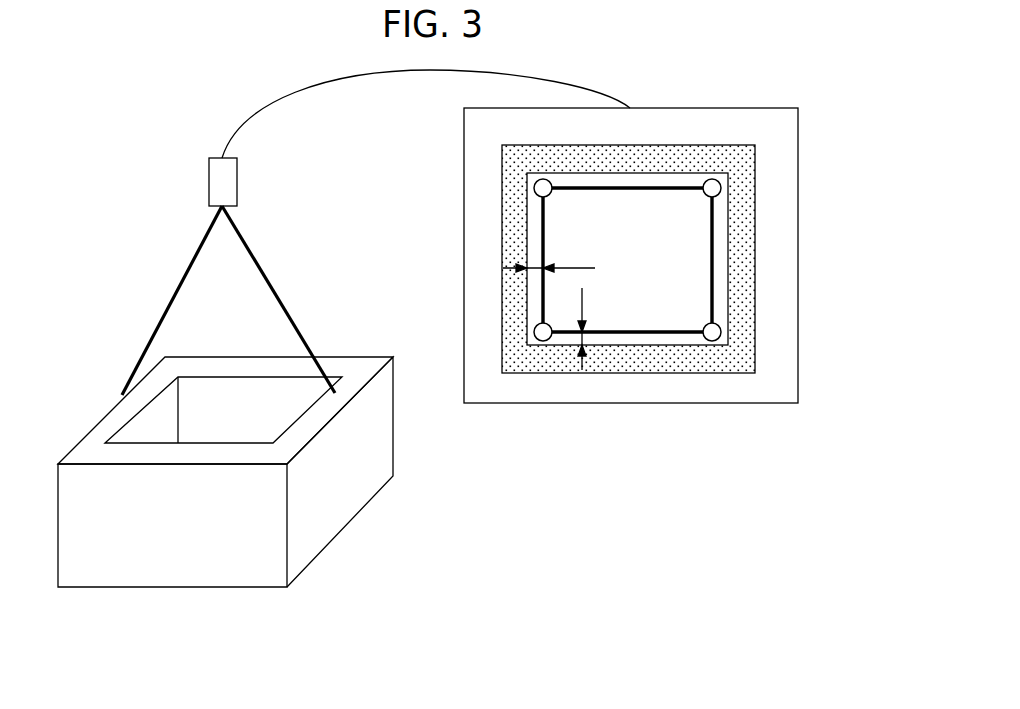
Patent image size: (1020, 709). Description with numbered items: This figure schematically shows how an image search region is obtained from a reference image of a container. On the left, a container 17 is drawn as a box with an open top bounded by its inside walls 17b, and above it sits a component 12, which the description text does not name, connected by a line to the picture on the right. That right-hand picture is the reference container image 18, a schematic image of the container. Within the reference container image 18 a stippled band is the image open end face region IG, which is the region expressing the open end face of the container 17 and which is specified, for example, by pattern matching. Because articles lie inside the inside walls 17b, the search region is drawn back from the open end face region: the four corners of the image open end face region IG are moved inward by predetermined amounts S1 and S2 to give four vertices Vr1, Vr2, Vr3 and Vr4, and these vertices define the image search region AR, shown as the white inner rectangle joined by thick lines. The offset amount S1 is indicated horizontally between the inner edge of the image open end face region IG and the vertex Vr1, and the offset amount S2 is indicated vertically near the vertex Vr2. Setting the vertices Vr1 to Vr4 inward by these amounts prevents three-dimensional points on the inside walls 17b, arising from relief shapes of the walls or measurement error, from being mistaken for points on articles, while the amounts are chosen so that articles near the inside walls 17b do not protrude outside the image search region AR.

The camera 12 is at (208, 192).
The container 17 is at (218, 555).
The inside walls 17b is at (165, 416).
The reference container image 18 is at (650, 403).
The image open end face region IG is at (745, 227).
The image search region AR is at (685, 287).
The first vertex Vr1 is at (538, 181).
The second vertex Vr2 is at (537, 338).
The third vertex Vr3 is at (716, 341).
The fourth vertex Vr4 is at (719, 179).
The predetermined amount S1 is at (549, 256).
The predetermined amount S2 is at (597, 329).